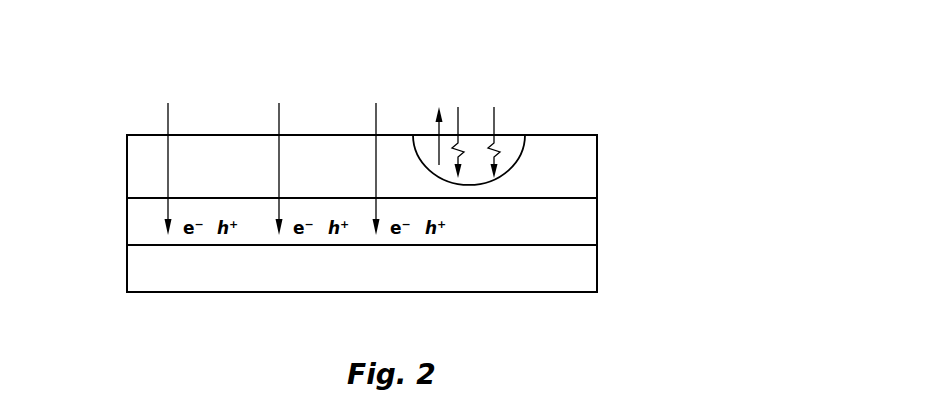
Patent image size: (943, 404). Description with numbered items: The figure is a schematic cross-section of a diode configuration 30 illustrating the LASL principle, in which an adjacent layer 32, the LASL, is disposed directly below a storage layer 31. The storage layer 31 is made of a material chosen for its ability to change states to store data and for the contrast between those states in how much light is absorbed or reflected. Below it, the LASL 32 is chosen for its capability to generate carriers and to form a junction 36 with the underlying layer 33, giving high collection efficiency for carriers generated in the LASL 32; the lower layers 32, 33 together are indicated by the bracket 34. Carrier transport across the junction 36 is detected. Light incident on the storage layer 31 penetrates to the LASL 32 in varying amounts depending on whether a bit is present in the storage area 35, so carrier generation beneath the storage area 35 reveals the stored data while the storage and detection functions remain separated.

The diode configuration 30 is at (605, 98).
The storage layer 31 is at (127, 163).
The adjacent layer (LASL) 32 is at (597, 218).
The layer 33 is at (597, 267).
The active layers 34 is at (108, 200).
The storage area 35 is at (478, 124).
The junction 36 is at (218, 245).